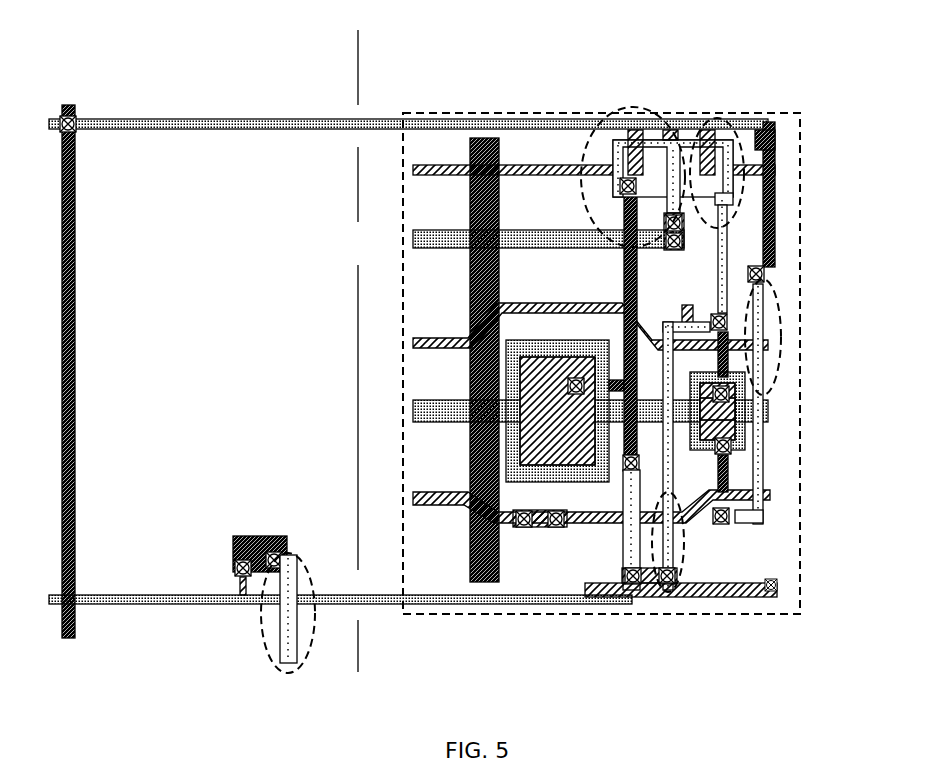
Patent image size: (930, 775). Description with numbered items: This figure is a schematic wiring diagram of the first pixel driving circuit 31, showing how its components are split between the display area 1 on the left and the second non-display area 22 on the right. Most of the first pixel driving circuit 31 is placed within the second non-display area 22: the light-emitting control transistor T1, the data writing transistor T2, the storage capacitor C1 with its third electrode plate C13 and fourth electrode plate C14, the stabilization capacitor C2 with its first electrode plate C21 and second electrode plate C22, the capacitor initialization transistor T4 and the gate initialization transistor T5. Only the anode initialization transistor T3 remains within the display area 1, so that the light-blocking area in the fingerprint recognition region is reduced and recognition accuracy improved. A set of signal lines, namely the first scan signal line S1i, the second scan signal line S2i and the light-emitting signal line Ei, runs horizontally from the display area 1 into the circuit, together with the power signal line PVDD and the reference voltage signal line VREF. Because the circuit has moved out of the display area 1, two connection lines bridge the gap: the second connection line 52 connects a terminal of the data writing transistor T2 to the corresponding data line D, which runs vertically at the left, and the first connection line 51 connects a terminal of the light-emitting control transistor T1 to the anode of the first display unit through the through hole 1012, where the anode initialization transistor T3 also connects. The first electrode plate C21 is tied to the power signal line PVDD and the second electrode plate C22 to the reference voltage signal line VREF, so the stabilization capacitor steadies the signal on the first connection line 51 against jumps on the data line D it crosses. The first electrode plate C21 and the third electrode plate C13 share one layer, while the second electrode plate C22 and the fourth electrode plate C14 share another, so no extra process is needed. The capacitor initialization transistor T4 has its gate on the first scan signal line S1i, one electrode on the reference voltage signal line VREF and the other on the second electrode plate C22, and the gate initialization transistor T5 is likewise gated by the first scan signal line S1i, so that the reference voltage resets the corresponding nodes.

The display area 1 is at (304, 69).
The second non-display area 22 is at (418, 69).
The data line D is at (72, 107).
The second connection line 52 is at (150, 128).
The first connection line 51 is at (155, 597).
The power signal line PVDD is at (470, 208).
The first scan signal line S1i is at (413, 170).
The reference voltage signal line VREF is at (430, 243).
The second scan signal line S2i is at (413, 343).
The light-emitting signal line Ei is at (413, 497).
The first electrode plate C21 is at (510, 388).
The second electrode plate C22 is at (575, 447).
The third electrode plate C13 is at (745, 448).
The fourth electrode plate C14 is at (740, 416).
The light-emitting control transistor T1 is at (680, 548).
The data writing transistor T2 is at (782, 330).
The anode initialization transistor T3 is at (318, 630).
The capacitor initialization transistor T4 is at (635, 107).
The gate initialization transistor T5 is at (735, 125).
The through hole 1012 is at (235, 536).
The first pixel driving circuit 31 is at (800, 588).